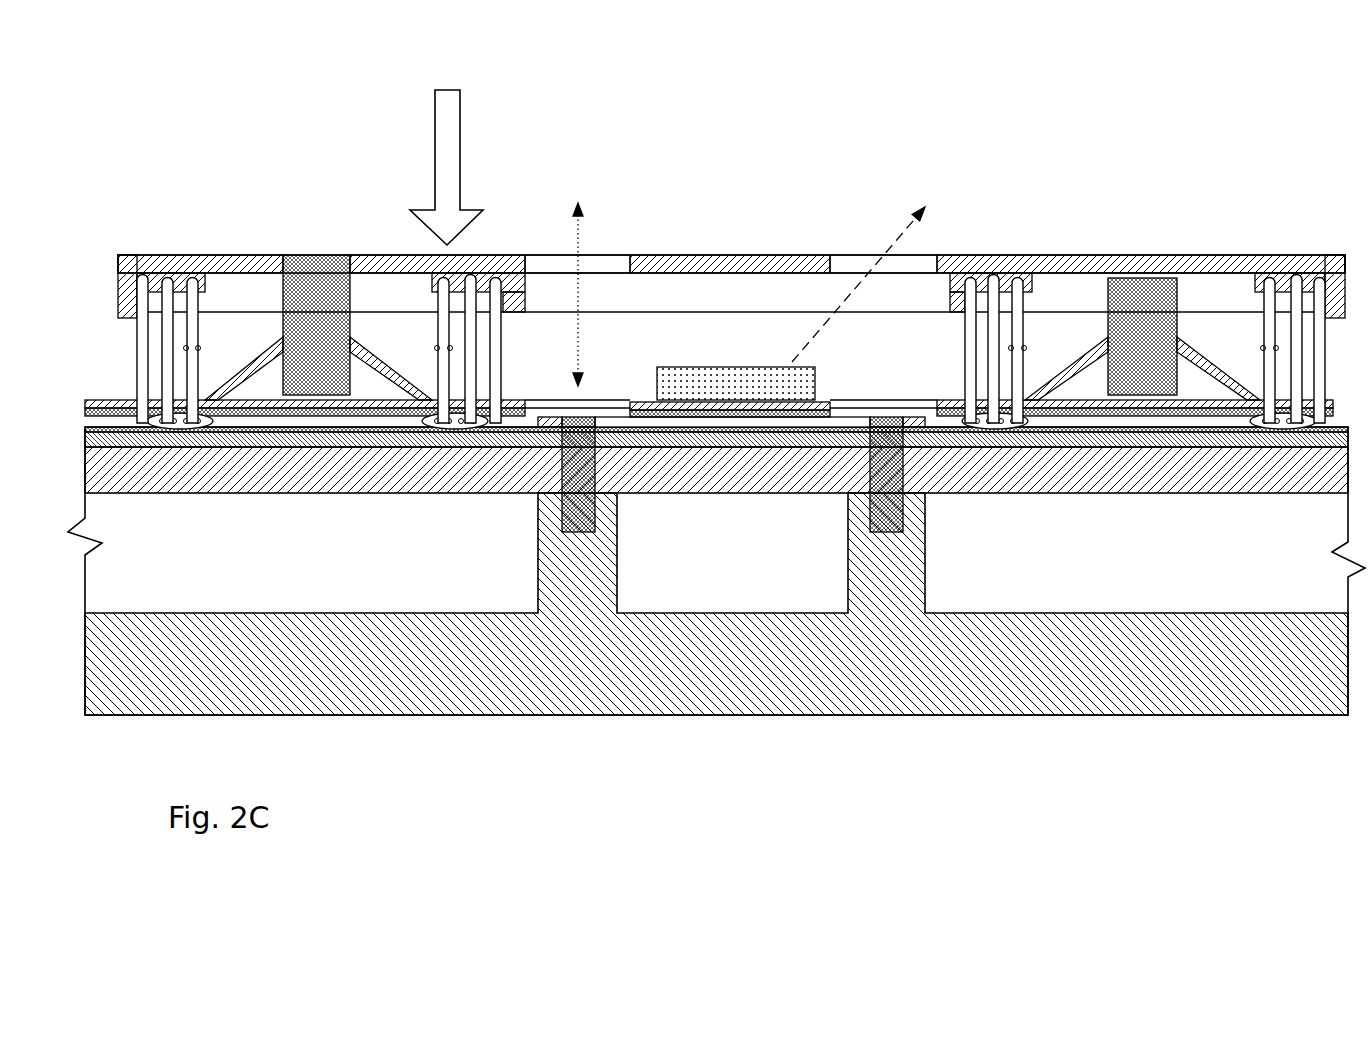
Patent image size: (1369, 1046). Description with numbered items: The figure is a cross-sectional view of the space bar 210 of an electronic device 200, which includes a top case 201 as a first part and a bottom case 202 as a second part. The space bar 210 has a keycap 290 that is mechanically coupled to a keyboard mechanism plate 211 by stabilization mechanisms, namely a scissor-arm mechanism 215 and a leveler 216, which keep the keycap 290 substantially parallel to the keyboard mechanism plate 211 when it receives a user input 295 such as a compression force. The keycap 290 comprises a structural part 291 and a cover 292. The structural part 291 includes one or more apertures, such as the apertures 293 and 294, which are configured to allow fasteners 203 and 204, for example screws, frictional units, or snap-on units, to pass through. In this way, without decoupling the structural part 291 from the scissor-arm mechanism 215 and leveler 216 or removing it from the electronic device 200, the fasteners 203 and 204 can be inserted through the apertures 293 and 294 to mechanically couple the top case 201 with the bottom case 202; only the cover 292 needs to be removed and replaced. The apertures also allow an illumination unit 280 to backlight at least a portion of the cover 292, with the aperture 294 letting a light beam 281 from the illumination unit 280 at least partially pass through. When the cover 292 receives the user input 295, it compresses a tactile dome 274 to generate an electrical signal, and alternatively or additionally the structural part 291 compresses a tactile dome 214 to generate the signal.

The electronic device 200 is at (868, 742).
The top case 201 is at (1173, 483).
The bottom case 202 is at (1155, 623).
The fastener 203 is at (570, 418).
The fastener 204 is at (892, 420).
The space bar 210 is at (1056, 192).
The keyboard mechanism plate 211 is at (1178, 440).
The tactile dome 214 is at (1150, 300).
The scissor-arm mechanism 215 is at (1272, 285).
The leveler 216 is at (1298, 287).
The tactile dome 274 is at (307, 270).
The illumination unit 280 is at (765, 377).
The light beam 281 is at (893, 243).
The keycap 290 is at (113, 248).
The structural part 291 is at (232, 255).
The cover 292 is at (393, 255).
The aperture 293 is at (540, 257).
The aperture 294 is at (845, 267).
The user input 295 is at (452, 137).